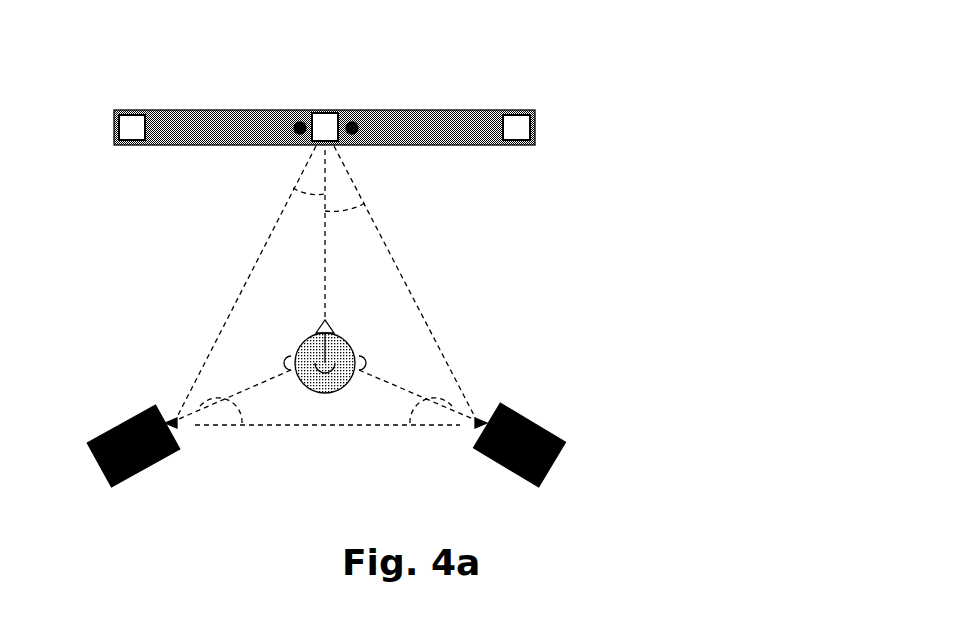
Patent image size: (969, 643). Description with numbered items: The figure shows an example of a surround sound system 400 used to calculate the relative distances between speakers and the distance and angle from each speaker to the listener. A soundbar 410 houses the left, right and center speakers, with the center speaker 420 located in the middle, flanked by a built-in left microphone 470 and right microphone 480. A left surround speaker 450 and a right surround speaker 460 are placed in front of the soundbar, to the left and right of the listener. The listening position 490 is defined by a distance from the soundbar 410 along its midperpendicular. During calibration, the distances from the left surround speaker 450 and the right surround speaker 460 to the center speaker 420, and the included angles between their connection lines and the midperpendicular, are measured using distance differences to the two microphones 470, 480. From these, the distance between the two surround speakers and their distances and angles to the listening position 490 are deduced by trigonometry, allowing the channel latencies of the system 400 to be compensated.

The surround sound system 400 is at (592, 60).
The soundbar 410 is at (220, 111).
The center speaker 420 is at (335, 112).
The left surround speaker 450 is at (128, 418).
The right surround speaker 460 is at (538, 420).
The left microphone 470 is at (294, 136).
The right microphone 480 is at (355, 138).
The listening position 490 is at (325, 371).